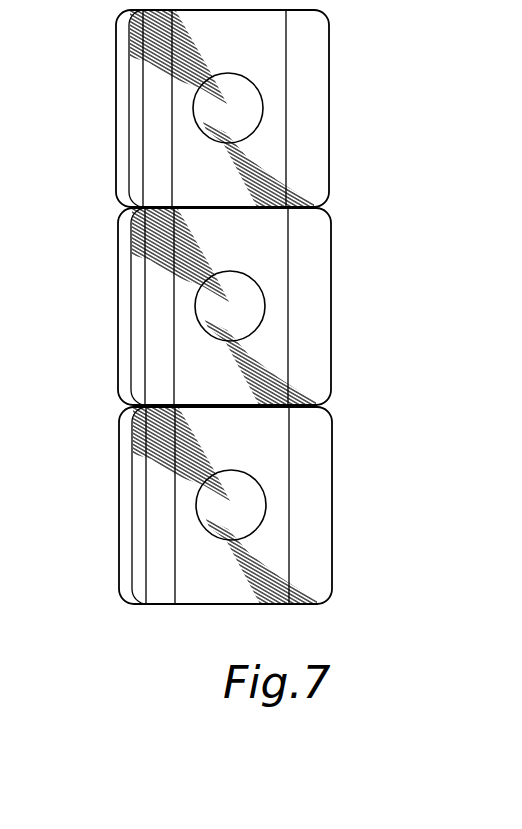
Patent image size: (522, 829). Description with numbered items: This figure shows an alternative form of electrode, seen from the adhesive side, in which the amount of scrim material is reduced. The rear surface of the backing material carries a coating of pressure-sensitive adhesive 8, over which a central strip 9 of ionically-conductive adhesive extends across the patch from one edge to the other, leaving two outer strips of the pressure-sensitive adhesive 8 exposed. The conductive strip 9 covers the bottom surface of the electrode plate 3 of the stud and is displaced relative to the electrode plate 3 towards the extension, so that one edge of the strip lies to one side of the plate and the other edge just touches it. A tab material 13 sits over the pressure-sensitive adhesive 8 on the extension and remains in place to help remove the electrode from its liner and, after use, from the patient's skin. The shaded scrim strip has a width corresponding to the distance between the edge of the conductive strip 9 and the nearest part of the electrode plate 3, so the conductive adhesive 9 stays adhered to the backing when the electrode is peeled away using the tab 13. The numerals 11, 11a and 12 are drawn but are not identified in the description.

The tile segment 11 is at (102, 51).
The tile segment edge 11a is at (196, 199).
The tab material 13 is at (121, 259).
The pressure-sensitive adhesive 8 is at (161, 582).
The strip of ionically-conductive adhesive 9 is at (233, 590).
The electrode plate 3 is at (268, 505).
The panel body 12 is at (316, 548).